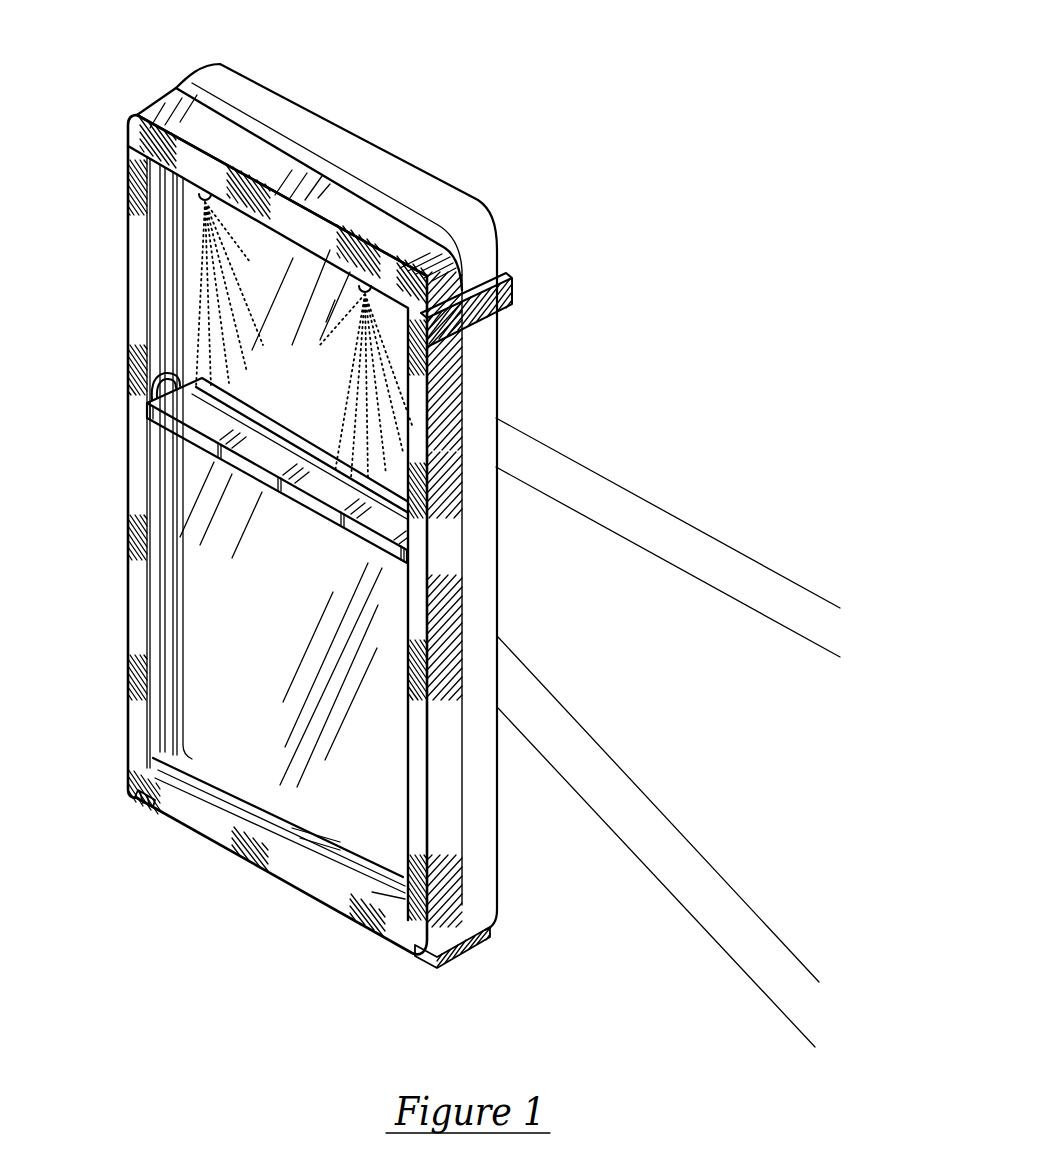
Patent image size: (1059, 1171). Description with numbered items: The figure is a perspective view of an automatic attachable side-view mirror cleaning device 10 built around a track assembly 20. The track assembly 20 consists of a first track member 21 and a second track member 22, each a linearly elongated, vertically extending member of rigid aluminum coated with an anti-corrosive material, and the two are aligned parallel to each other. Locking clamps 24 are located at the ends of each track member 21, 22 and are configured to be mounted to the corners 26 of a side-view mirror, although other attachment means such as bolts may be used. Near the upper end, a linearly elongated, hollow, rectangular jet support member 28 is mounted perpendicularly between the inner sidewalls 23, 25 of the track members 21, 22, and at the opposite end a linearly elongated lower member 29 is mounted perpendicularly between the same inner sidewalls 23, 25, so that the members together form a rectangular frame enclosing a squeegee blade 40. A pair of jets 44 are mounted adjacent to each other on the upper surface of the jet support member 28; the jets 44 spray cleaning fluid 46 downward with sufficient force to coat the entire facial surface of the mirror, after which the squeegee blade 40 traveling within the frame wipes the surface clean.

The automatic attachable side-view mirror cleaning device 10 is at (104, 112).
The track assembly 20 is at (96, 715).
The first track member 21 is at (132, 408).
The second track member 22 is at (445, 422).
The inner sidewall 23 is at (175, 760).
The locking clamps 24 is at (512, 300).
The inner sidewall 25 is at (398, 878).
The corners 26 is at (218, 75).
The jet support member 28 is at (273, 165).
The lower member 29 is at (270, 863).
The squeegee blade 40 is at (225, 383).
The jets 44 is at (207, 188).
The cleaning fluid 46 is at (208, 246).